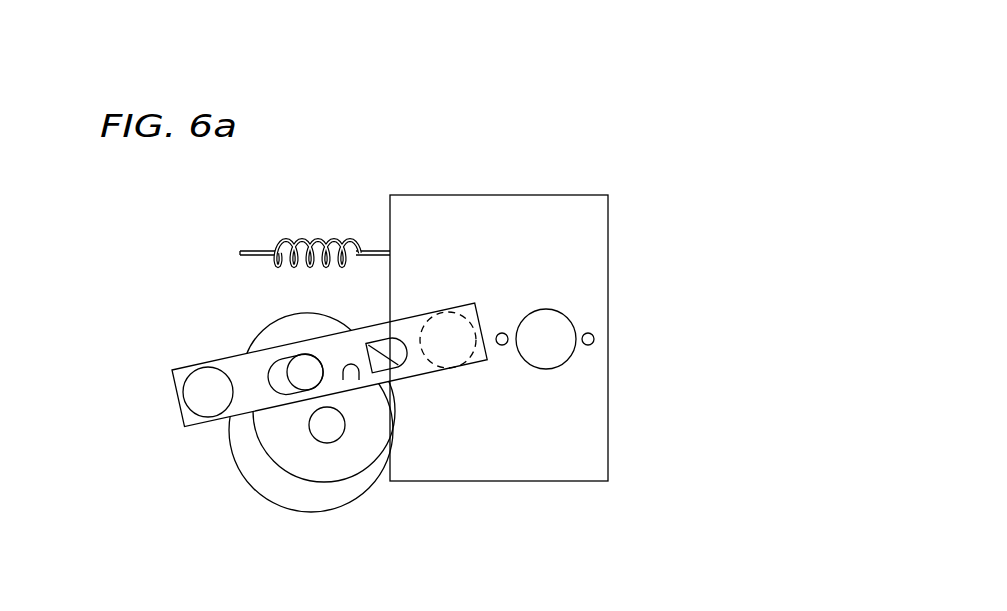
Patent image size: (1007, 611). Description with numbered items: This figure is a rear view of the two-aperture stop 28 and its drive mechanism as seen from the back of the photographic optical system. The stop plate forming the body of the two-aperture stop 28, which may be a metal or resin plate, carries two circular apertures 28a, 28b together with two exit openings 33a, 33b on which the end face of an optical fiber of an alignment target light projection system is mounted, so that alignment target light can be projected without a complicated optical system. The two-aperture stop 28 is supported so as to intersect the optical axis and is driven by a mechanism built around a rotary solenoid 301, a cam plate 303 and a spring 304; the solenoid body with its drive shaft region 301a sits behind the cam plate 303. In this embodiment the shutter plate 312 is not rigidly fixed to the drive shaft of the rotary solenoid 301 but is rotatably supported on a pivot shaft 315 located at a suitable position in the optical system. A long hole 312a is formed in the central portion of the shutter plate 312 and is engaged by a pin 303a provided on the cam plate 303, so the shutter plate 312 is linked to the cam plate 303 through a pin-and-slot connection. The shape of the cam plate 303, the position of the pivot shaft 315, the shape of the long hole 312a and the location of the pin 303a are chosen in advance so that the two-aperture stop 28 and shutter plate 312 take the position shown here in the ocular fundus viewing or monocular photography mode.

The two-aperture stop 28 is at (577, 233).
The circular aperture 28a is at (462, 313).
The circular aperture 28b is at (548, 320).
The exit opening 33a is at (503, 345).
The exit opening 33b is at (590, 345).
The rotary solenoid 301 is at (293, 488).
The shaft 301a is at (323, 430).
The cam plate 303 is at (268, 335).
The pin 303a is at (300, 372).
The spring 304 is at (292, 240).
The shutter plate 312 is at (376, 323).
The long hole 312a is at (359, 380).
The pivot shaft 315 is at (202, 398).